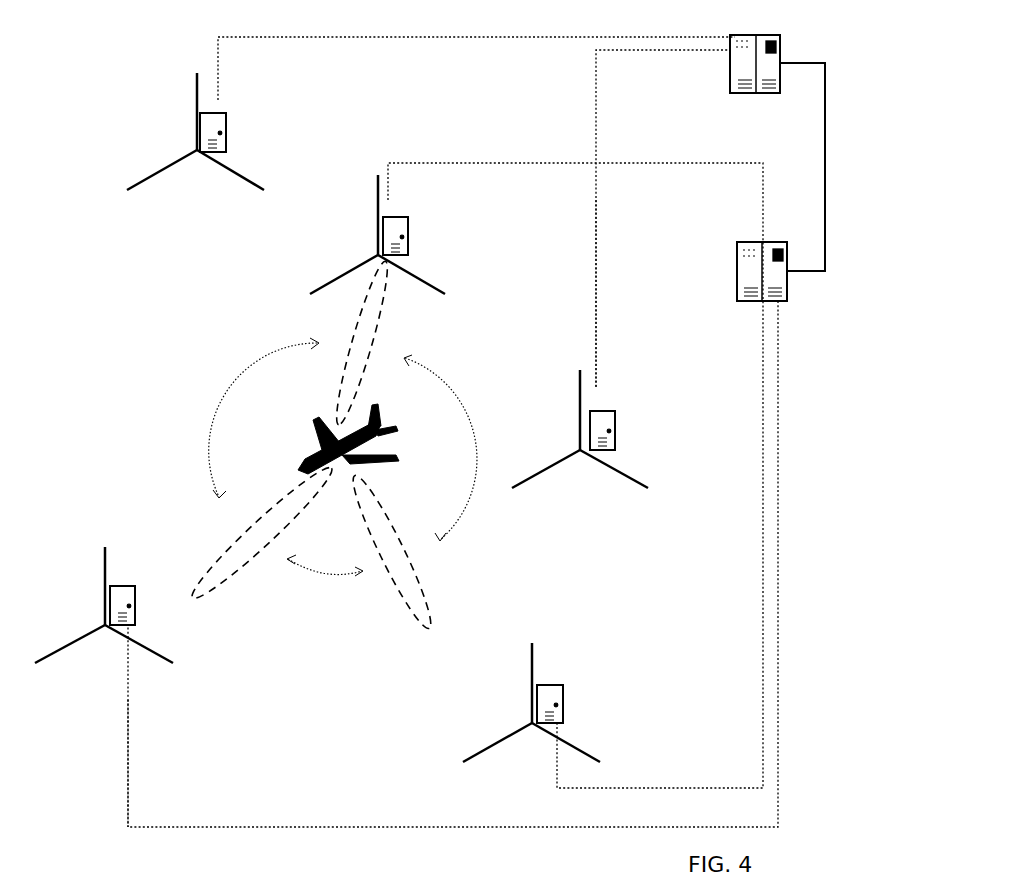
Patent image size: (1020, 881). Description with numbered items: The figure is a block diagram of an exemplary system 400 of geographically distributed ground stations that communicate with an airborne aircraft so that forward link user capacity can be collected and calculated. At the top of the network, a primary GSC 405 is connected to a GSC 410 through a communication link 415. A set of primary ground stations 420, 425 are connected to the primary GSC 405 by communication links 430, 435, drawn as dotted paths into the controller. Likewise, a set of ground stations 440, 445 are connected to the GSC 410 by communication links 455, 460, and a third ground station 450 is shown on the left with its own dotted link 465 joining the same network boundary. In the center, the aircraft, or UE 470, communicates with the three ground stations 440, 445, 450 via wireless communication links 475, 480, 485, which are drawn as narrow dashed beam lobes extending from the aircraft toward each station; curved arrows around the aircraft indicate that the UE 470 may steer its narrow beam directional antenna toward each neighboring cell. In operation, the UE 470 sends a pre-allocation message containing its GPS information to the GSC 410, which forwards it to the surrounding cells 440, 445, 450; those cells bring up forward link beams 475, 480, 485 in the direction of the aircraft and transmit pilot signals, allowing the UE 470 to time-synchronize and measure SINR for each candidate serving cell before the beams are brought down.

The system 400 is at (476, 53).
The primary GSC 405 is at (728, 67).
The GSC 410 is at (735, 273).
The communication link 415 is at (830, 145).
The primary ground station 420 is at (228, 130).
The primary ground station 425 is at (620, 430).
The communication link 430 is at (475, 44).
The communication link 435 is at (590, 323).
The ground station 440 is at (410, 240).
The ground station 445 is at (565, 700).
The ground station 450 is at (100, 588).
The communication link 455 is at (558, 158).
The communication link 460 is at (758, 585).
The link between GS3 and GSC 465 is at (132, 762).
The UE 470 is at (312, 418).
The wireless communication link 475 is at (215, 590).
The wireless communication link 480 is at (430, 600).
The wireless communication link 485 is at (388, 310).